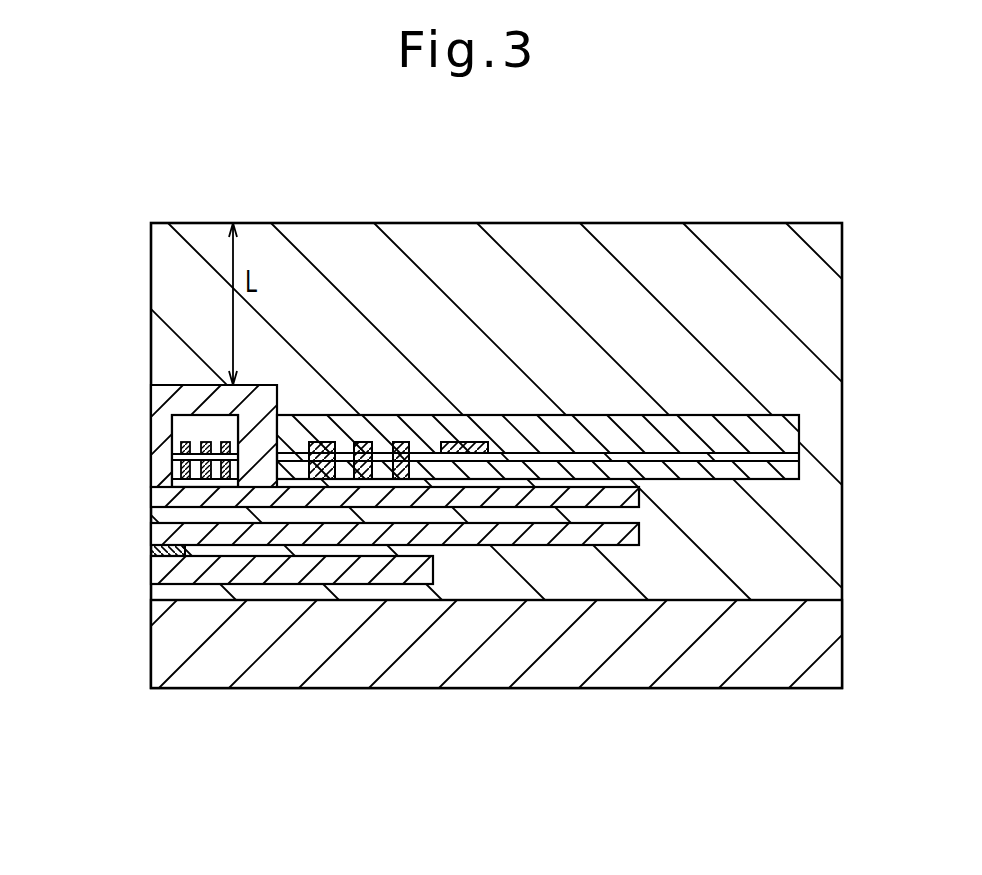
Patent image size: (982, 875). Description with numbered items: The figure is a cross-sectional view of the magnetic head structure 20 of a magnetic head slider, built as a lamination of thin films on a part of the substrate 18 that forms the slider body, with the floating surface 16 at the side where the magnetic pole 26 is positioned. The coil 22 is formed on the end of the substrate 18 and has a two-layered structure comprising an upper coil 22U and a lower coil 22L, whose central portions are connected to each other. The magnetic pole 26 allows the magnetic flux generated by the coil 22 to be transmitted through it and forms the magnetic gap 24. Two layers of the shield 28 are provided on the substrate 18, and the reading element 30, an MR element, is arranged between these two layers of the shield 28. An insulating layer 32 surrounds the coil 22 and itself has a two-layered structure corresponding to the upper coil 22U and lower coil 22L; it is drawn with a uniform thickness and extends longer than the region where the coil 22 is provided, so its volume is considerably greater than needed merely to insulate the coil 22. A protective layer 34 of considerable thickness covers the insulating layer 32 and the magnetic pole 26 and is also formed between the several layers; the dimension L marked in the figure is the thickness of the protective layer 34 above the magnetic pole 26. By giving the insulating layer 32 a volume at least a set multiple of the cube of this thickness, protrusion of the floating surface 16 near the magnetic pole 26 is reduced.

The floating surface 16 is at (152, 637).
The substrate 18 is at (488, 675).
The magnetic head structure 20 is at (462, 204).
The coil 22 is at (130, 460).
The upper coil 22U is at (172, 450).
The lower coil 22L is at (172, 467).
The magnetic gap 24 is at (158, 423).
The magnetic pole 26 is at (163, 395).
The shield 28 is at (160, 533).
The reading element (MR element) 30 is at (155, 551).
The insulating layer 32 is at (793, 477).
The protective layer 34 is at (810, 317).